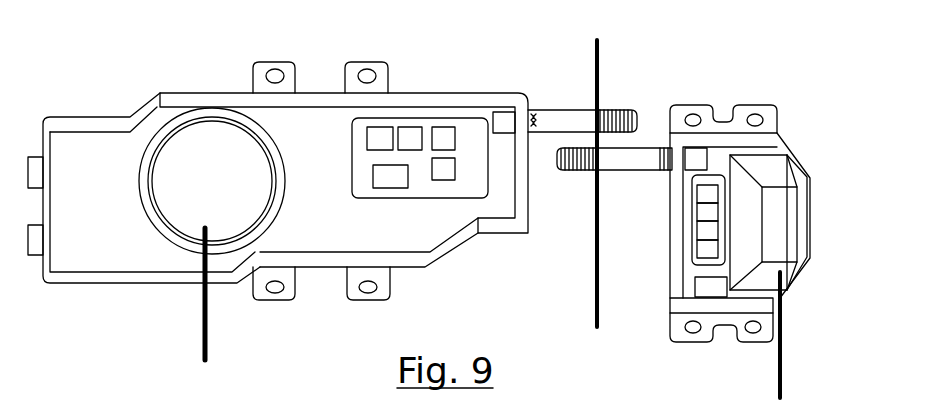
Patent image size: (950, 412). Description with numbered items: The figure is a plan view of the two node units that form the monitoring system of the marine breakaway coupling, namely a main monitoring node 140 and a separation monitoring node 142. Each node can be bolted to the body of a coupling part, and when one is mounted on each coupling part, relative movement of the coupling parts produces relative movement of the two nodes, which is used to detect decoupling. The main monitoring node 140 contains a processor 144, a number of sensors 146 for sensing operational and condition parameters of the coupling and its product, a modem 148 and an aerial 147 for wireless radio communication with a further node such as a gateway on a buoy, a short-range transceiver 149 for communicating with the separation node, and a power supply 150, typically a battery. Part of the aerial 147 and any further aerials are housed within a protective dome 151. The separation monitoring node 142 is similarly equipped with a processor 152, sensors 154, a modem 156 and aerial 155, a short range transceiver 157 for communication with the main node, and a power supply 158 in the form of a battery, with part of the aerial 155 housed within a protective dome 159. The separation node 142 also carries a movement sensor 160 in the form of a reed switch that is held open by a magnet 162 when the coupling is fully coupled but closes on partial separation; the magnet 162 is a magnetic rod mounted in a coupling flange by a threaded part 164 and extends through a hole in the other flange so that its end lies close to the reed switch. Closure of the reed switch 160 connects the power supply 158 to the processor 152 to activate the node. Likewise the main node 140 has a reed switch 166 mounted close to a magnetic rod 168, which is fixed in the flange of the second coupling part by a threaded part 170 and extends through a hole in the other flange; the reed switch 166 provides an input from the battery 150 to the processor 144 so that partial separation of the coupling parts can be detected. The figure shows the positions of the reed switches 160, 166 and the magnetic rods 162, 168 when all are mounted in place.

The main monitoring node 140 is at (207, 92).
The separation monitoring node 142 is at (770, 133).
The processor 144 is at (366, 142).
The sensors 146 is at (410, 127).
The aerial 147 is at (202, 333).
The modem 148 is at (443, 127).
The short-range transceiver 149 is at (443, 168).
The power supply 150 is at (395, 178).
The protective dome 151 is at (170, 148).
The processor 152 is at (705, 192).
The sensors 154 is at (707, 213).
The aerial 155 is at (779, 378).
The modem 156 is at (707, 237).
The short range transceiver 157 is at (703, 253).
The power supply 158 is at (702, 290).
The protective dome 159 is at (788, 245).
The movement sensor 160 is at (697, 155).
The magnet 162 is at (645, 148).
The threaded part 164 is at (572, 172).
The reed switch 166 is at (500, 112).
The magnetic rod 168 is at (553, 110).
The threaded part 170 is at (617, 110).